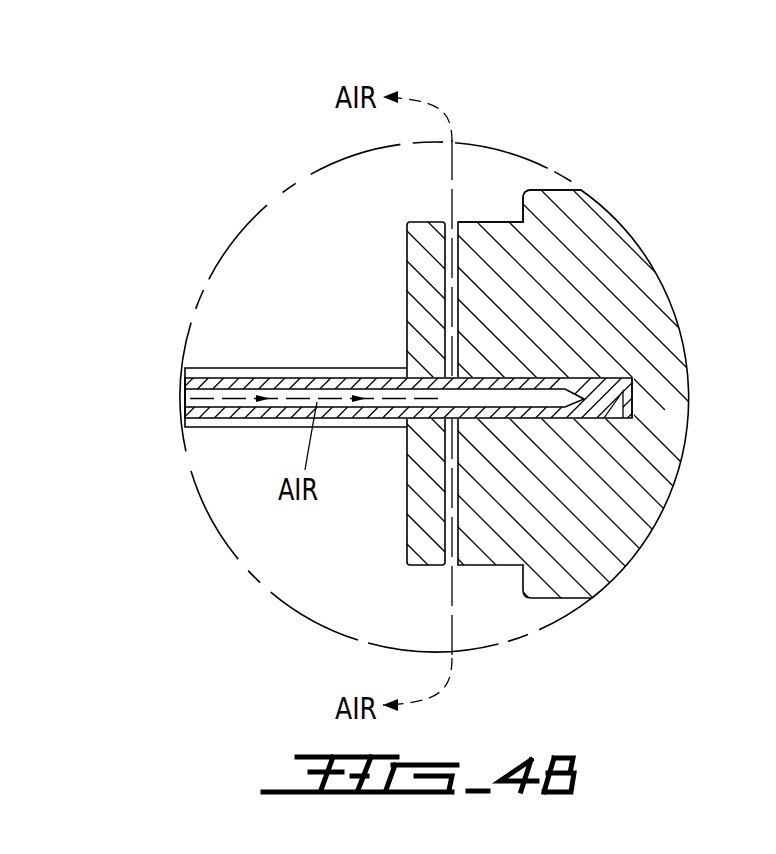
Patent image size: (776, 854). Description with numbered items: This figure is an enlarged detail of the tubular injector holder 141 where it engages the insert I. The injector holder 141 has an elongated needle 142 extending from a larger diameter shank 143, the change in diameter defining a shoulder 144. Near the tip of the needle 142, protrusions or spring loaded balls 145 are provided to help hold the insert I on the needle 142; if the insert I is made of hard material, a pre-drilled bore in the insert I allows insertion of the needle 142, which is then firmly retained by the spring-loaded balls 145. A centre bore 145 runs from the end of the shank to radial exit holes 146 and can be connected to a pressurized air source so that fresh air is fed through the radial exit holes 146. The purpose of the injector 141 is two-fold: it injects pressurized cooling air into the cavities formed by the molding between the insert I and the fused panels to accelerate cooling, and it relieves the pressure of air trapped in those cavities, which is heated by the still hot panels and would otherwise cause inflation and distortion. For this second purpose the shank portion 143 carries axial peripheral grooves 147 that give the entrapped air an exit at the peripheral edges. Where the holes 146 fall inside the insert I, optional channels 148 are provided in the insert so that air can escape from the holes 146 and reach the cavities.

The tubular injector holder 141 is at (439, 413).
The elongated needle 142 is at (547, 422).
The larger diameter shank 143 is at (372, 368).
The shoulder 144 is at (422, 419).
The spring loaded balls / centre bore 145 is at (600, 418).
The radial exit holes 146 is at (463, 377).
The axial peripheral grooves 147 is at (234, 378).
The channels 148 is at (455, 225).
The insert I is at (595, 233).